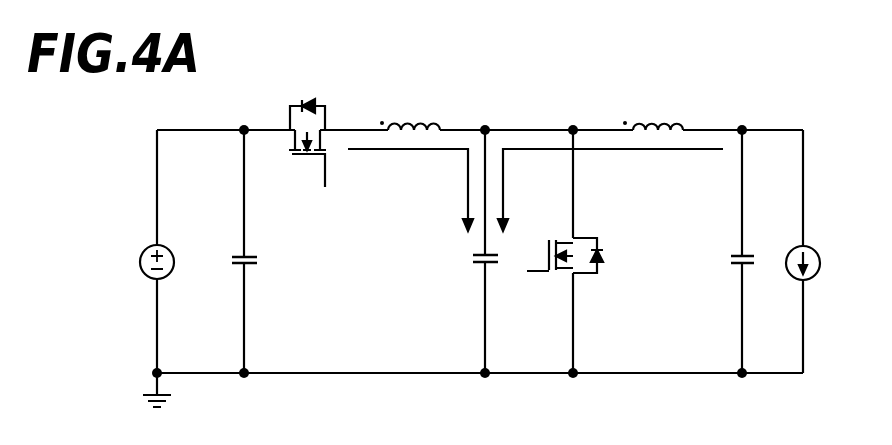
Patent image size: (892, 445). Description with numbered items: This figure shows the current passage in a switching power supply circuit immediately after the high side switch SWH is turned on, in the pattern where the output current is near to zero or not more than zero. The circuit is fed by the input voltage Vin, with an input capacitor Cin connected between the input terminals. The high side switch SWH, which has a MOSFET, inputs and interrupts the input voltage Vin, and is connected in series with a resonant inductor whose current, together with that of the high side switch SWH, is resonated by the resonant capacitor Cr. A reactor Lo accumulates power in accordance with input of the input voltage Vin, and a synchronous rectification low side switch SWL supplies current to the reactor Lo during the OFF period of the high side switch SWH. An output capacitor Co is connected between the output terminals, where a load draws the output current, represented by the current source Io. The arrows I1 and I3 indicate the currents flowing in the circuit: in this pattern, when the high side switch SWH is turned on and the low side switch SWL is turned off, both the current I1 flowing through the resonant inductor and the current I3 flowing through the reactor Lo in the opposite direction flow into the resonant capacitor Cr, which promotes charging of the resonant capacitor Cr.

The high side switch SWH is at (304, 128).
The synchronous rectification low side switch SWL is at (589, 257).
The input voltage Vin is at (173, 262).
The input capacitor Cin is at (262, 264).
The resonant capacitor Cr is at (471, 261).
The reactor Lo is at (653, 109).
The output capacitor Co is at (728, 264).
The output current source Io is at (815, 263).
The current I1 is at (410, 190).
The output current I3 is at (610, 190).